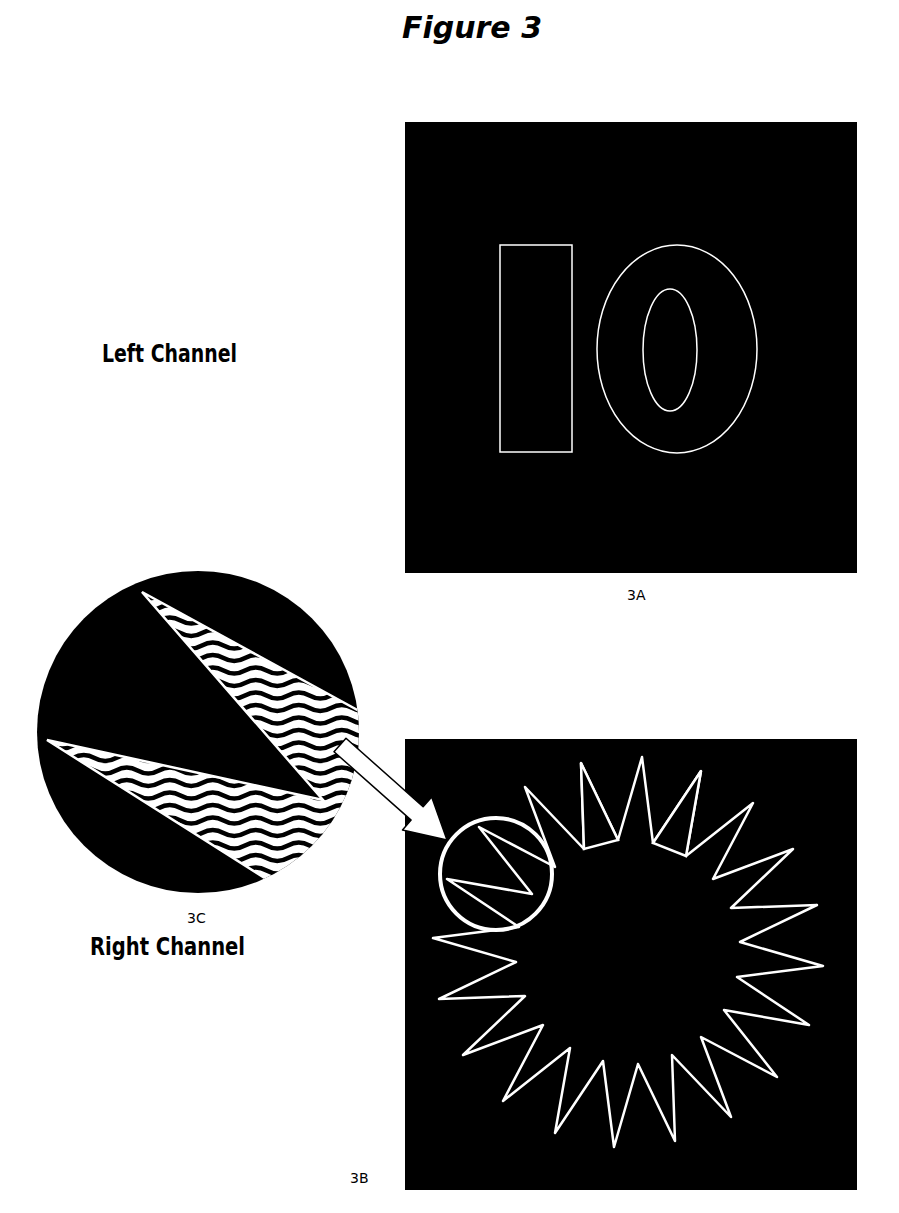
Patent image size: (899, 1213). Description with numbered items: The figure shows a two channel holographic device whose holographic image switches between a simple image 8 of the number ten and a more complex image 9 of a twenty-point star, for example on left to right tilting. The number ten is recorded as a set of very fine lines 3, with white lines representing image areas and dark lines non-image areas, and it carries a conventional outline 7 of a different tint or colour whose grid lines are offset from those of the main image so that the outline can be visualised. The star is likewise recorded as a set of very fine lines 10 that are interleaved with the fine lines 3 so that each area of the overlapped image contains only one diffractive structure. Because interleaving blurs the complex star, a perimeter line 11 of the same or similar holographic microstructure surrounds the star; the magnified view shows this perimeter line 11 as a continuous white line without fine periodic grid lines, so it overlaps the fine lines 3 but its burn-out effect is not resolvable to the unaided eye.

In FIG. 3A, the fine lines 3 is at (672, 432).
In FIG. 3A, the outline 7 is at (500, 356).
In FIG. 3A, the image 8 is at (740, 113).
In FIG. 3B, the image 9 is at (395, 1055).
In FIG. 3B, the fine lines 10 is at (722, 805).
In FIG. 3C, the fine lines 10 is at (278, 840).
In FIG. 3B, the perimeter line 11 is at (589, 775).
In FIG. 3C, the perimeter line 11 is at (233, 632).